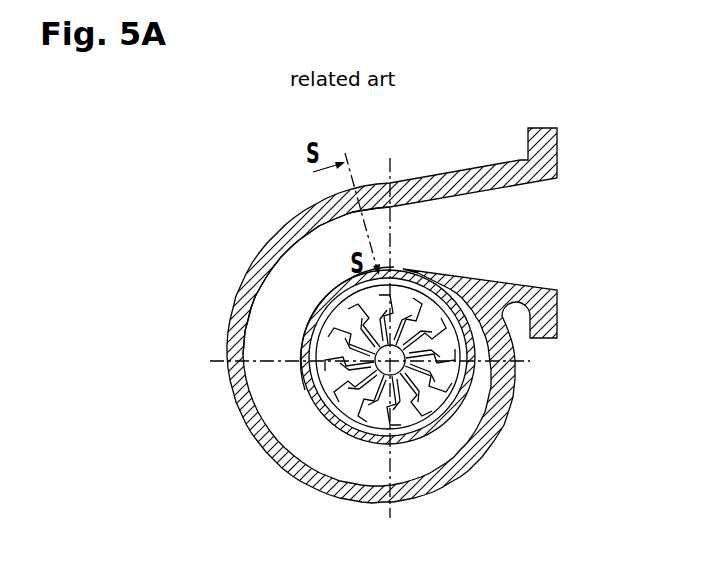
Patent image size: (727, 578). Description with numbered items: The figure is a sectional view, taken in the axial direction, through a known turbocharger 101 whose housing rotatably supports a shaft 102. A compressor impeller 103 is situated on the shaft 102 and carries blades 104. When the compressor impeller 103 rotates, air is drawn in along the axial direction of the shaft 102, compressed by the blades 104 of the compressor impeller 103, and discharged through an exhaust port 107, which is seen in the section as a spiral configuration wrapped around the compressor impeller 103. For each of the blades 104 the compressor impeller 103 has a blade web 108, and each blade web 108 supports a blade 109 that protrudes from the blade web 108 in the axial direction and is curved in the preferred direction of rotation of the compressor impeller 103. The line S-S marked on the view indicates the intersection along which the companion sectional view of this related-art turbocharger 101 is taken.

The turbocharger 101 is at (480, 139).
The shaft 102 is at (470, 387).
The compressor impeller 103 is at (340, 410).
The blades 104 is at (335, 322).
The exhaust port 107 is at (262, 183).
The blade web 108 is at (327, 337).
The blade 109 is at (318, 374).